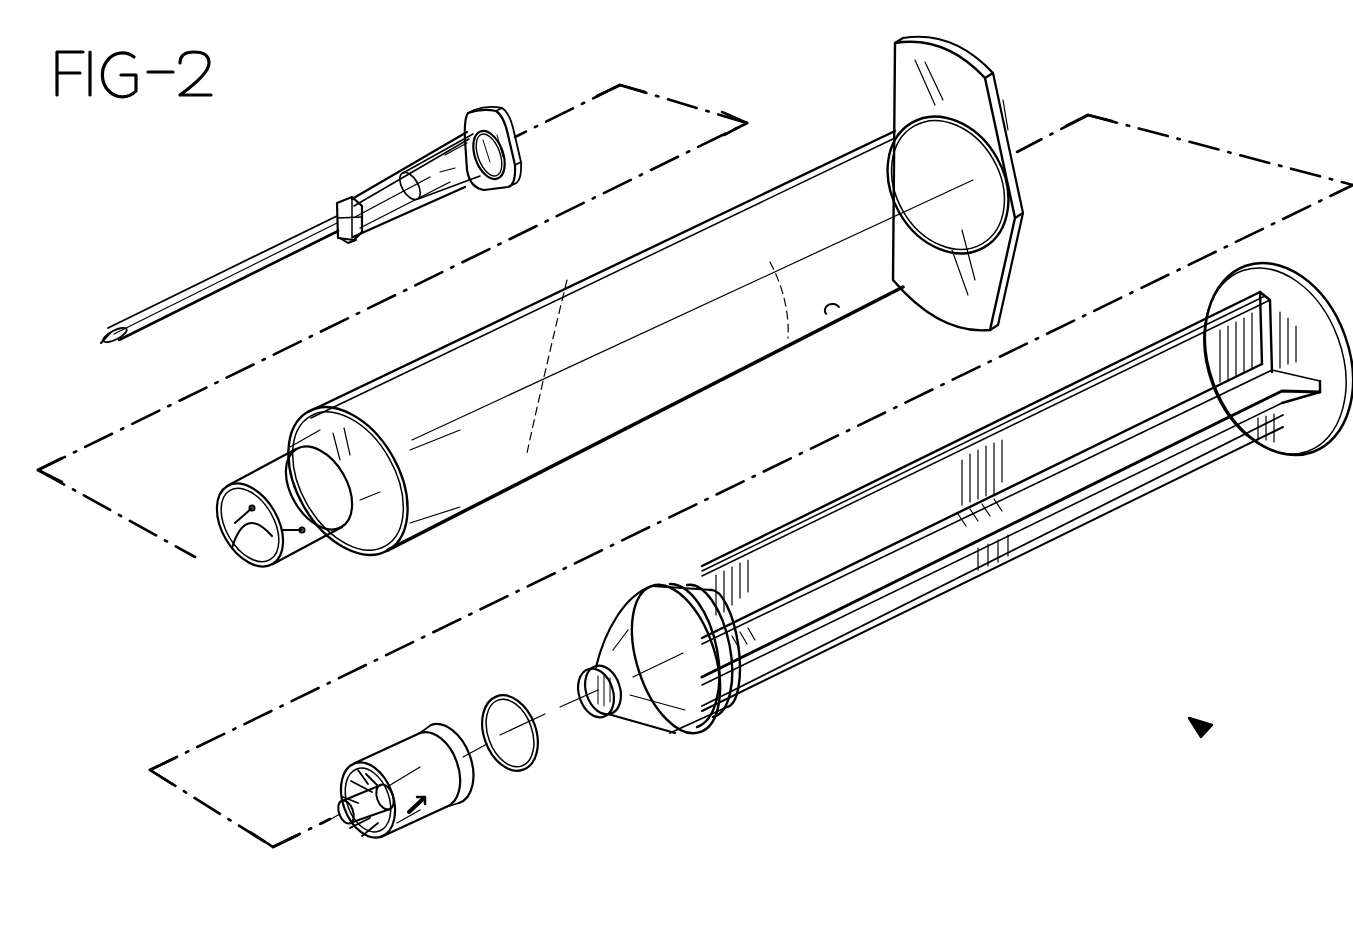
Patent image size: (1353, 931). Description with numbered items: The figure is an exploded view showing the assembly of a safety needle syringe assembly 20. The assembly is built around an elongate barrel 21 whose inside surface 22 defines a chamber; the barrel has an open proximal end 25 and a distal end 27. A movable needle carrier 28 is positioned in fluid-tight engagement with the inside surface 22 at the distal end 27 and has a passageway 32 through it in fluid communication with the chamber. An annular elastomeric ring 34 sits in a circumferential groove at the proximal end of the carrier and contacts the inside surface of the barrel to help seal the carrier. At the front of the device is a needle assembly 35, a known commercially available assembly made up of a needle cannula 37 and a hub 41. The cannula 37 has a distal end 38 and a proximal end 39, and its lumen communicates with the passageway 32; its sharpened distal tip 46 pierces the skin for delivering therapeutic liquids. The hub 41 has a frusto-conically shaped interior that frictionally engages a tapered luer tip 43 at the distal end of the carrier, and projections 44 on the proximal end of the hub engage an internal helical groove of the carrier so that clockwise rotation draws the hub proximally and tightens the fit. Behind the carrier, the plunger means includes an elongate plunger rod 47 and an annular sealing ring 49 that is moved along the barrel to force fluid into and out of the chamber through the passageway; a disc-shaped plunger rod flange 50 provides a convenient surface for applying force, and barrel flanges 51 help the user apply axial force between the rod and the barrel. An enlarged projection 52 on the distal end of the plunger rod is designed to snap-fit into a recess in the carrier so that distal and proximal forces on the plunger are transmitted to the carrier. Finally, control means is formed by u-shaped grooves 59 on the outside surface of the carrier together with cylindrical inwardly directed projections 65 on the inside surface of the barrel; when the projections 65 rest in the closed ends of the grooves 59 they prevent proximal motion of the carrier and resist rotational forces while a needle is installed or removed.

The syringe assembly 20 is at (1205, 733).
The barrel 21 is at (772, 186).
The inside surface 22 is at (838, 311).
The open proximal end 25 is at (1007, 110).
The distal end 27 is at (262, 477).
The needle carrier 28 is at (384, 757).
The passageway 32 is at (347, 810).
The annular elastomeric ring 34 is at (545, 750).
The needle assembly 35 is at (347, 200).
The needle cannula 37 is at (233, 273).
The distal end 38 is at (135, 330).
The proximal end 39 is at (342, 240).
The hub 41 is at (444, 144).
The tapered luer tip 43 is at (343, 777).
The projections 44 is at (487, 111).
The sharpened distal tip 46 is at (101, 343).
The plunger rod 47 is at (1013, 507).
The annular sealing ring 49 is at (724, 687).
The plunger rod flange 50 is at (1326, 430).
The barrel flanges 51 is at (888, 90).
The enlarged projection 52 is at (592, 673).
The u-shaped grooves 59 is at (440, 810).
The inwardly directed projections 65 is at (272, 538).